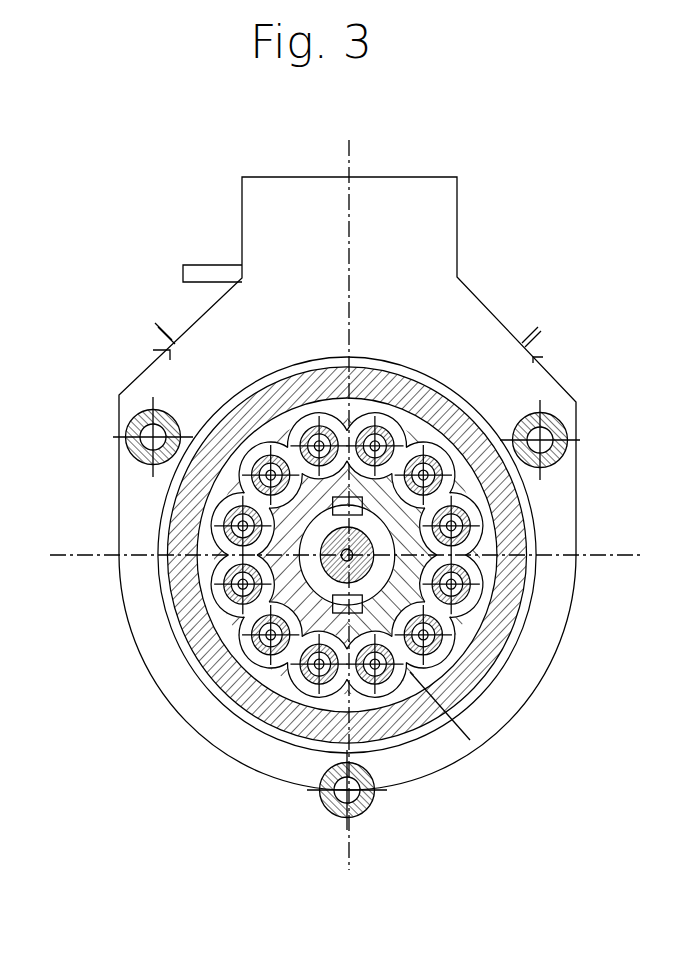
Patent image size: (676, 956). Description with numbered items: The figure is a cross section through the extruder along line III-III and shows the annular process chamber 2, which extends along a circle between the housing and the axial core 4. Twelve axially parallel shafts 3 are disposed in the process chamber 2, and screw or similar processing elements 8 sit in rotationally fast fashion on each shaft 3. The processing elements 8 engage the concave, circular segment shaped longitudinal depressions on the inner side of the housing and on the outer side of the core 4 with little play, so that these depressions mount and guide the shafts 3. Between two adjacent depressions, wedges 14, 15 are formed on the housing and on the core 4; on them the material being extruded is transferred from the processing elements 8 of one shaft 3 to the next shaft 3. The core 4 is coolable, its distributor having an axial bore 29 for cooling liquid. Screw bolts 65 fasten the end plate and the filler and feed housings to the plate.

The process chamber 2 is at (470, 700).
The shaft 3 is at (457, 618).
The core 4 is at (212, 700).
The processing elements 8 is at (267, 668).
The wedge 14 is at (470, 740).
The wedge 15 is at (385, 700).
The axial bore 29 is at (445, 655).
The screw bolts 65 is at (130, 418).